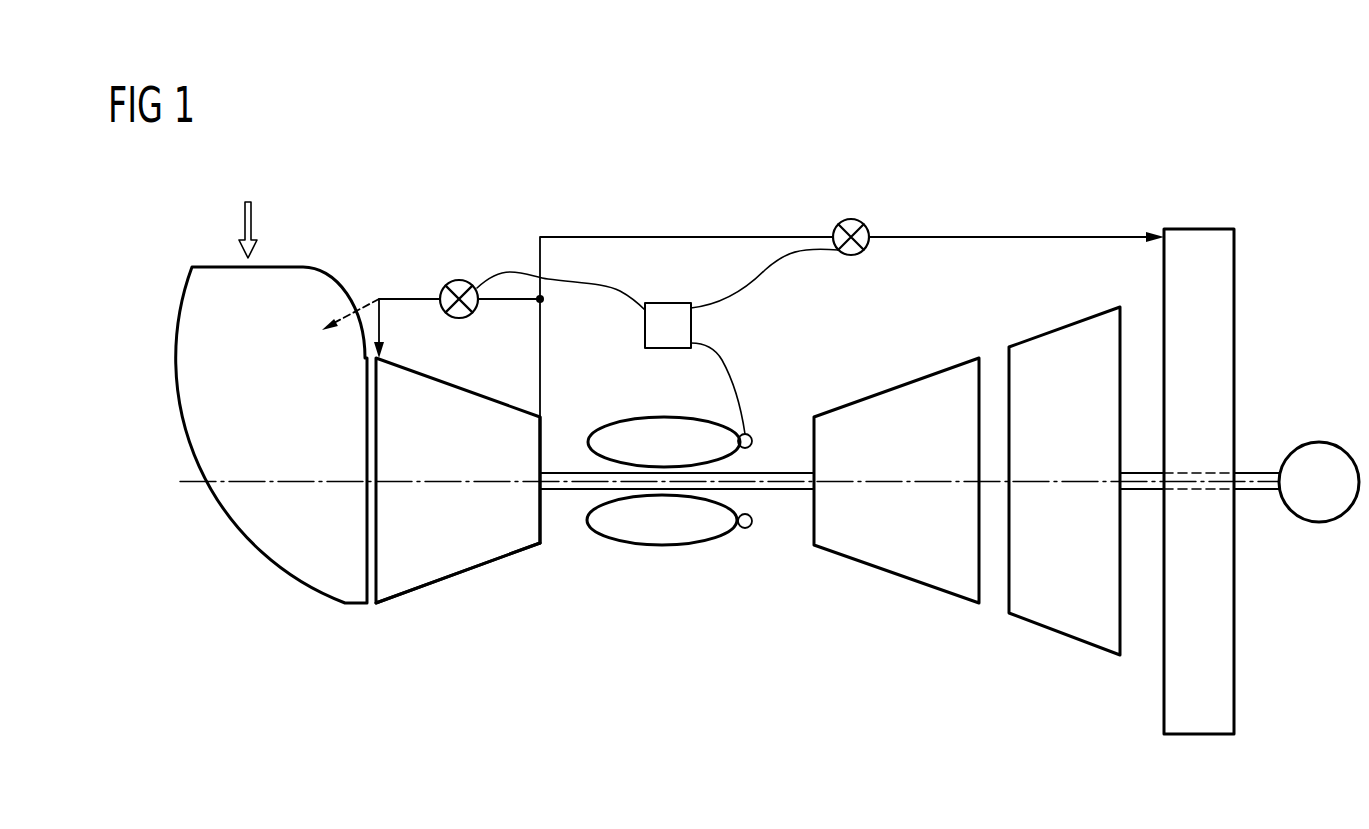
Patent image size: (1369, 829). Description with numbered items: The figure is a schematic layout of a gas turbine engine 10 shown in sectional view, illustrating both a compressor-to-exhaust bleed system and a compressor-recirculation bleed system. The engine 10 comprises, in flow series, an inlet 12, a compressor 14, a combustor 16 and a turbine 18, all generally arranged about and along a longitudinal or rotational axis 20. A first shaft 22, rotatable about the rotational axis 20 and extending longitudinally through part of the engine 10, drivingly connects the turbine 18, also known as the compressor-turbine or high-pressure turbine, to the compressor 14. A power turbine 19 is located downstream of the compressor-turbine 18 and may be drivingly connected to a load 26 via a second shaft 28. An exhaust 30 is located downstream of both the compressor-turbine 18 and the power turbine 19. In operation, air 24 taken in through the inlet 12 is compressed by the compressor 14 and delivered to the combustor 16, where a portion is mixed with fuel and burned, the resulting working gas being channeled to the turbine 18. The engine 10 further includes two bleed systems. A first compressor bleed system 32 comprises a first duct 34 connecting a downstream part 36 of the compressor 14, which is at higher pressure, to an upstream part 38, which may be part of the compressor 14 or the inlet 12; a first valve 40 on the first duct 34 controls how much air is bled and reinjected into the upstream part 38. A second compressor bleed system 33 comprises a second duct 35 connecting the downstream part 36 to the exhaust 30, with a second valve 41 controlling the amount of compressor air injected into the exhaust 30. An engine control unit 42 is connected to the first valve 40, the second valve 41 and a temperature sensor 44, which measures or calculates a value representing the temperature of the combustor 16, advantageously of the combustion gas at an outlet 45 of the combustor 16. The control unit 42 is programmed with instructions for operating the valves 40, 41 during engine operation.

The gas turbine engine 10 is at (497, 153).
The inlet 12 is at (176, 328).
The compressor 14 is at (500, 402).
The combustor 16 is at (663, 546).
The turbine 18 is at (890, 574).
The power turbine 19 is at (1063, 634).
The rotational axis 20 is at (262, 481).
The first shaft 22 is at (779, 472).
The air 24 is at (242, 223).
The load 26 is at (1321, 522).
The second shaft 28 is at (1257, 471).
The exhaust 30 is at (1236, 650).
The first compressor bleed system 32 is at (403, 275).
The second compressor bleed system 33 is at (948, 225).
The first duct 34 is at (378, 292).
The second duct 35 is at (715, 236).
The downstream part 36 is at (523, 549).
The upstream part 38 is at (393, 601).
The first valve 40 is at (458, 280).
The second valve 41 is at (833, 219).
The engine control unit 42 is at (645, 325).
The temperature sensor 44 is at (750, 434).
The outlet of the combustor 45 is at (740, 528).